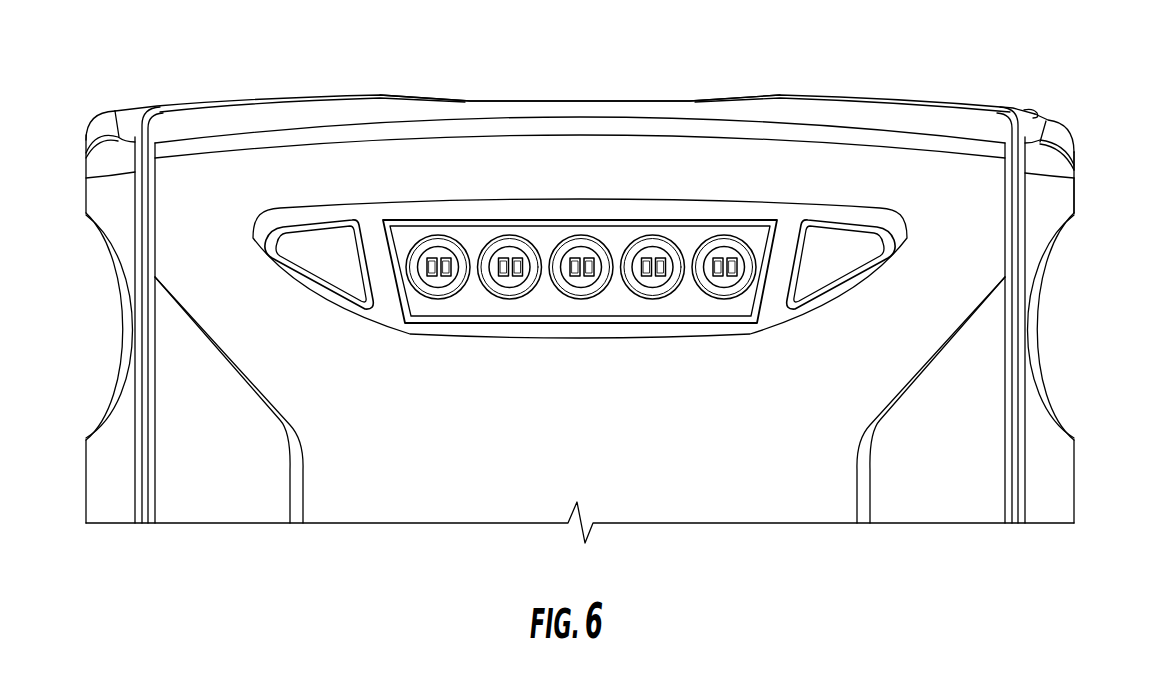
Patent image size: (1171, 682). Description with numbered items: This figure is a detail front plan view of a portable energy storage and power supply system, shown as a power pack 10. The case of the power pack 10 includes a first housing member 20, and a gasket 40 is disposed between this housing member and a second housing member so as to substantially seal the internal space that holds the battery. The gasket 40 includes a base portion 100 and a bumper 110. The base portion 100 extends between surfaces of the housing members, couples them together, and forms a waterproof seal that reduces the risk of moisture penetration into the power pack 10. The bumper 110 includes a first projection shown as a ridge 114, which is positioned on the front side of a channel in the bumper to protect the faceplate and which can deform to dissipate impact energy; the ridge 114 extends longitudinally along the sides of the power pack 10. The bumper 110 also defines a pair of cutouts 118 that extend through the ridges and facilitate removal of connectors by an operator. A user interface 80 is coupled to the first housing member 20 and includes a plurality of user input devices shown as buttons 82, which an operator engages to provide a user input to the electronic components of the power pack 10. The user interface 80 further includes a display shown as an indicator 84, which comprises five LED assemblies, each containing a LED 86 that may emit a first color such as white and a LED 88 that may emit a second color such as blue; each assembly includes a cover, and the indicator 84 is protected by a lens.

The power pack 10 is at (1083, 108).
The first housing member 20 is at (821, 168).
The gasket 40 is at (953, 102).
The user interface 80 is at (628, 355).
The buttons 82 is at (340, 267).
The indicator 84 is at (505, 326).
The LED 86 is at (433, 253).
The LED 88 is at (452, 272).
The base portion 100 is at (1023, 117).
The bumper 110 is at (1082, 193).
The ridge 114 is at (115, 160).
The cutouts 118 is at (110, 338).